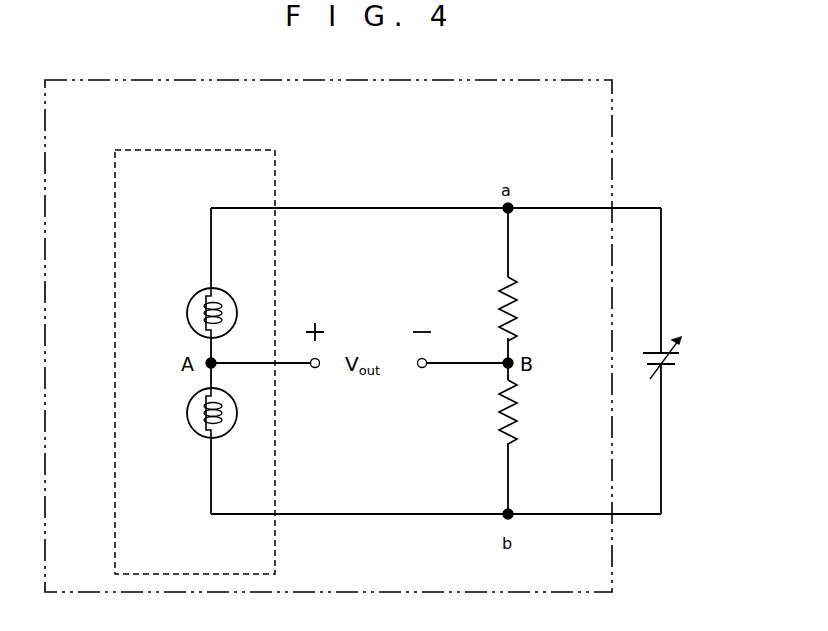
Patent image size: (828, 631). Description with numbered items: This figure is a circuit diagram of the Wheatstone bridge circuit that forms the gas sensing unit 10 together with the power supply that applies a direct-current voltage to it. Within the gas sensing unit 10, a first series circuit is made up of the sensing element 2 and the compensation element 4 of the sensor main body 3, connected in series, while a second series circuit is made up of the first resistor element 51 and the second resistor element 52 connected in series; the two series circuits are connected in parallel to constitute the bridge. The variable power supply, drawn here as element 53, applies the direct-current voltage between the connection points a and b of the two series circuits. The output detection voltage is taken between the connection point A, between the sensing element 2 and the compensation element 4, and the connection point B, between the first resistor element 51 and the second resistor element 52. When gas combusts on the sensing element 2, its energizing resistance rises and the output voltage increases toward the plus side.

The gas sensing unit 10 is at (384, 147).
The sensor main body 3 is at (202, 149).
The compensation element 4 is at (187, 318).
The sensing element 2 is at (187, 417).
The second resistor element 52 is at (518, 300).
The first resistor element 51 is at (518, 405).
The variable power source 53 is at (683, 358).